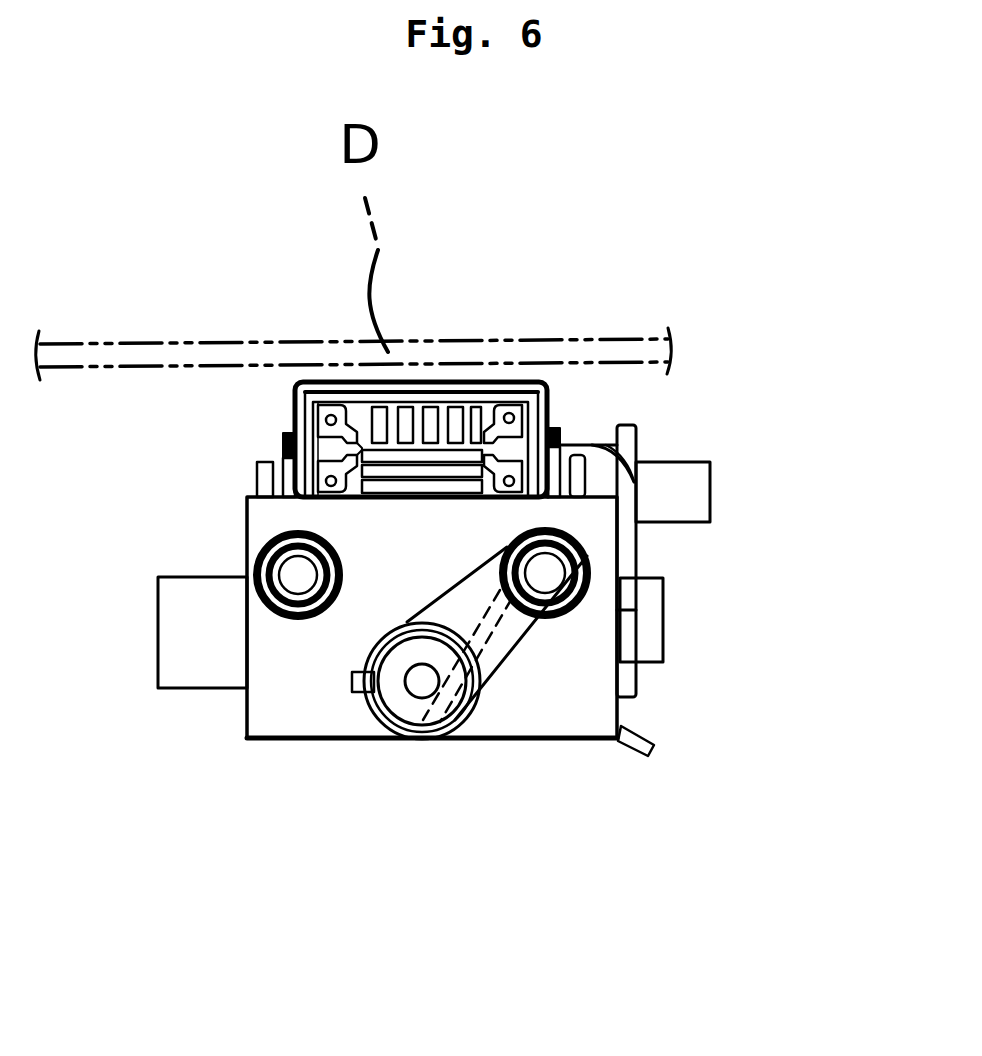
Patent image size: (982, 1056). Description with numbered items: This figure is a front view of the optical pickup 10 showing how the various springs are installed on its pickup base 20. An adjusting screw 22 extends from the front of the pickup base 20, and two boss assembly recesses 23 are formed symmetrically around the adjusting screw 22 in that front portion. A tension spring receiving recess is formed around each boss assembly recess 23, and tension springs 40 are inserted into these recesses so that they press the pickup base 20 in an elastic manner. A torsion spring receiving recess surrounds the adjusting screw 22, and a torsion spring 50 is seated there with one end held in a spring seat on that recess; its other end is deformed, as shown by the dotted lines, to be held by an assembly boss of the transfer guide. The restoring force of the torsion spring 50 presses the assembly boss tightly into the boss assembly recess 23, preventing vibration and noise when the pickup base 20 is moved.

The optical pickup 10 is at (477, 667).
The pickup base 20 is at (573, 708).
The adjusting screw 22 is at (418, 684).
The boss assembly recess 23 is at (296, 572).
The tension spring 40 is at (288, 615).
The torsion spring 50 is at (425, 722).